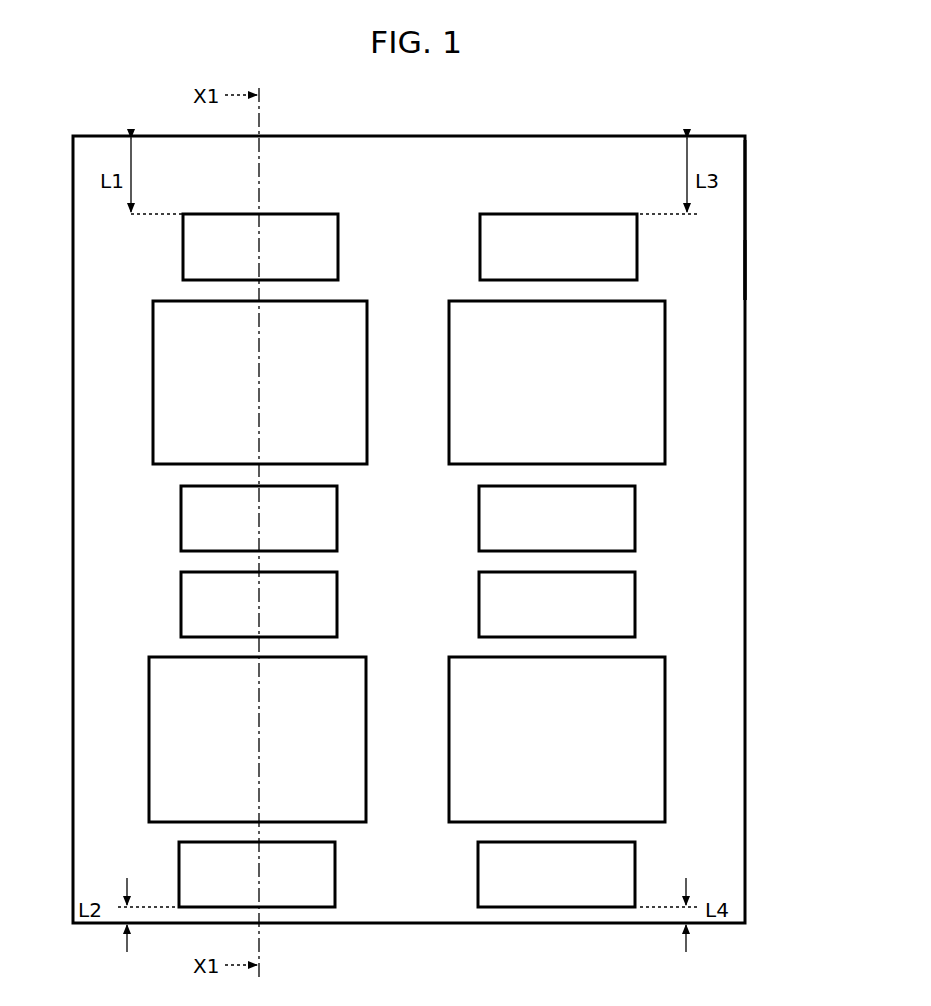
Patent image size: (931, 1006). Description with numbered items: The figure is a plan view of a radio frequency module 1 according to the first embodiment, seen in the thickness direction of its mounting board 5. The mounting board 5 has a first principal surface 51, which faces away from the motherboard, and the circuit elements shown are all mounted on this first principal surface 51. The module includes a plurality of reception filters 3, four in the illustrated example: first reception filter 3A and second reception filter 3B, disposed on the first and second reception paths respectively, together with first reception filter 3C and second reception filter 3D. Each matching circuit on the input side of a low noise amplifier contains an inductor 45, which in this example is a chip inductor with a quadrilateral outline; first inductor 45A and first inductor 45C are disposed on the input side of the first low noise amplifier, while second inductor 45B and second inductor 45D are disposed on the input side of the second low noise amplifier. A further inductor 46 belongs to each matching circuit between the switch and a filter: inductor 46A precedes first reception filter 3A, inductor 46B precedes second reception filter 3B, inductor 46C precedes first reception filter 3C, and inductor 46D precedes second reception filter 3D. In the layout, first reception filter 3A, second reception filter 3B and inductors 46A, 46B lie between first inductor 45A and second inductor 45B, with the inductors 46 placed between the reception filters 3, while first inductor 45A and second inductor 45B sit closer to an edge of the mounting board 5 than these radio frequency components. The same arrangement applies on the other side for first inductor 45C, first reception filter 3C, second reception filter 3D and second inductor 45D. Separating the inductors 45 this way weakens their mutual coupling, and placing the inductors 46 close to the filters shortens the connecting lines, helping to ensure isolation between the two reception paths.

The radio frequency module 1 is at (738, 110).
The mounting board 5 is at (748, 212).
The first principal surface 51 is at (727, 270).
The reception filter 3 is at (406, 561).
The first reception filter 3A is at (182, 351).
The second reception filter 3B is at (195, 725).
The first reception filter 3C is at (637, 352).
The second reception filter 3D is at (643, 732).
The inductor 45 is at (408, 540).
The first inductor 45A is at (318, 228).
The second inductor 45B is at (318, 857).
The first inductor 45C is at (543, 228).
The second inductor 45D is at (490, 892).
The inductor 46 is at (403, 560).
The inductor 46A is at (192, 503).
The inductor 46B is at (185, 590).
The inductor 46C is at (620, 505).
The inductor 46D is at (610, 590).